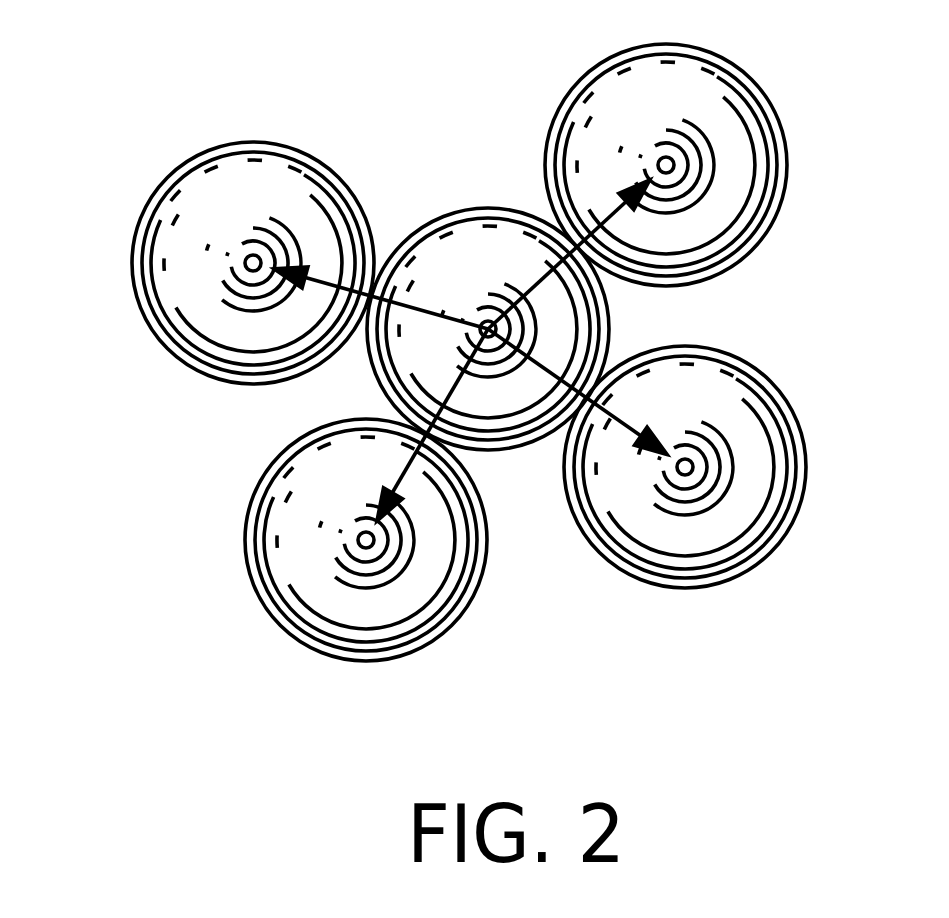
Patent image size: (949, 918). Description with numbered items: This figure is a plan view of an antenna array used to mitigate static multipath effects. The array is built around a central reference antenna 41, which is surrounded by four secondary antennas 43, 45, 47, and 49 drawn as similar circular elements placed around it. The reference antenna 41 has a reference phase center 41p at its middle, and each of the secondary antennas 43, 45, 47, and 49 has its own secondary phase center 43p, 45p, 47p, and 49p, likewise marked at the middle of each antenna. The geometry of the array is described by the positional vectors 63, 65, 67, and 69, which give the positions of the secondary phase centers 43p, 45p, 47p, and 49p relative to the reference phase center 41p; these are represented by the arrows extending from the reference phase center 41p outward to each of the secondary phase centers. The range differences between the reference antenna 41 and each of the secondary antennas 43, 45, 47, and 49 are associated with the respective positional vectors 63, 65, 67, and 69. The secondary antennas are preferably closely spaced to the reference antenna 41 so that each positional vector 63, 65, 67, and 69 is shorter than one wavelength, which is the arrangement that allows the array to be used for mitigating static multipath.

The reference antenna 41 is at (514, 211).
The reference phase center 41p is at (486, 327).
The secondary antenna 43 is at (214, 144).
The secondary phase center 43p is at (248, 260).
The secondary antenna 45 is at (779, 123).
The secondary phase center 45p is at (675, 167).
The secondary antenna 47 is at (789, 393).
The secondary phase center 47p is at (694, 469).
The secondary antenna 49 is at (286, 456).
The secondary phase center 49p is at (357, 538).
The positional vector 63 is at (323, 264).
The positional vector 65 is at (718, 239).
The positional vector 67 is at (626, 436).
The positional vector 69 is at (433, 487).